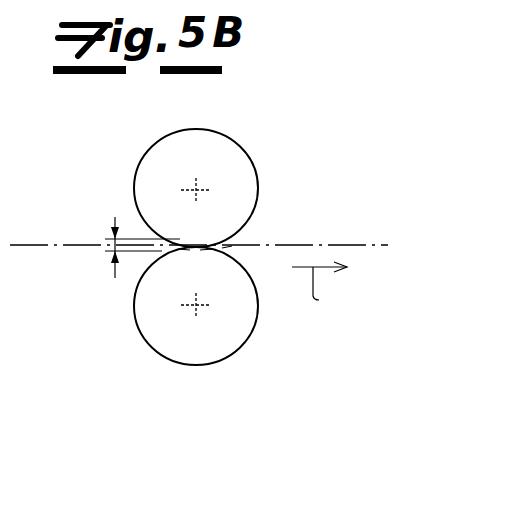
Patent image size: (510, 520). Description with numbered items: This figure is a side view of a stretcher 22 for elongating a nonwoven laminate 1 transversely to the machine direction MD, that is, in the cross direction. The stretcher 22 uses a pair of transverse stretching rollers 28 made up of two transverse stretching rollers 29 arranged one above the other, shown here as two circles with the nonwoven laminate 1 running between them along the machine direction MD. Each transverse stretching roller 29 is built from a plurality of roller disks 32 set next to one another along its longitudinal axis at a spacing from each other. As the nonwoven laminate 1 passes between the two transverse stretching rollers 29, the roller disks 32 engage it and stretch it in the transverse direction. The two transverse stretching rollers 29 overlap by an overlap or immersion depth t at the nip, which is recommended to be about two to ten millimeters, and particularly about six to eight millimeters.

The nonwoven laminate 1 is at (340, 245).
The stretcher 22 is at (105, 158).
The pair of transverse stretching rollers 28 is at (140, 380).
The transverse stretching roller 29 is at (234, 244).
The roller disk 32 is at (229, 146).
The overlap of the two transverse stretching rollers t is at (108, 252).
The machine direction MD is at (329, 293).